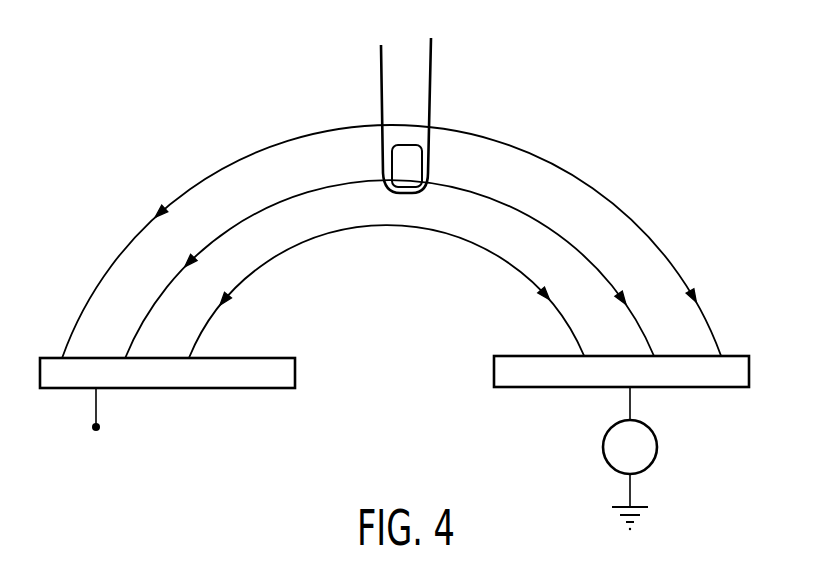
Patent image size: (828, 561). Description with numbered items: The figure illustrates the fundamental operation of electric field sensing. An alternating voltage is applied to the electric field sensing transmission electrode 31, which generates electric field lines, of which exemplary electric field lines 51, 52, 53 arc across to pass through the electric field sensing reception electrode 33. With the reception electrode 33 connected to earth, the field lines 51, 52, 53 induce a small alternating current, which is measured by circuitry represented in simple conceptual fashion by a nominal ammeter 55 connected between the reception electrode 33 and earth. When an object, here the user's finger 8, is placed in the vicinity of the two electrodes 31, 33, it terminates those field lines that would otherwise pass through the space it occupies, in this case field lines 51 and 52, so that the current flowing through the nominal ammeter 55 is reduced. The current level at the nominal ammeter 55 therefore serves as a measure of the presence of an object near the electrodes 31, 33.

The finger 8 is at (431, 68).
The electric field line 51 is at (518, 147).
The electric field line 52 is at (530, 216).
The electric field line 53 is at (490, 254).
The electric field sensing transmission electrode 31 is at (52, 358).
The electric field sensing reception electrode 33 is at (740, 356).
The nominal ammeter 55 is at (657, 431).